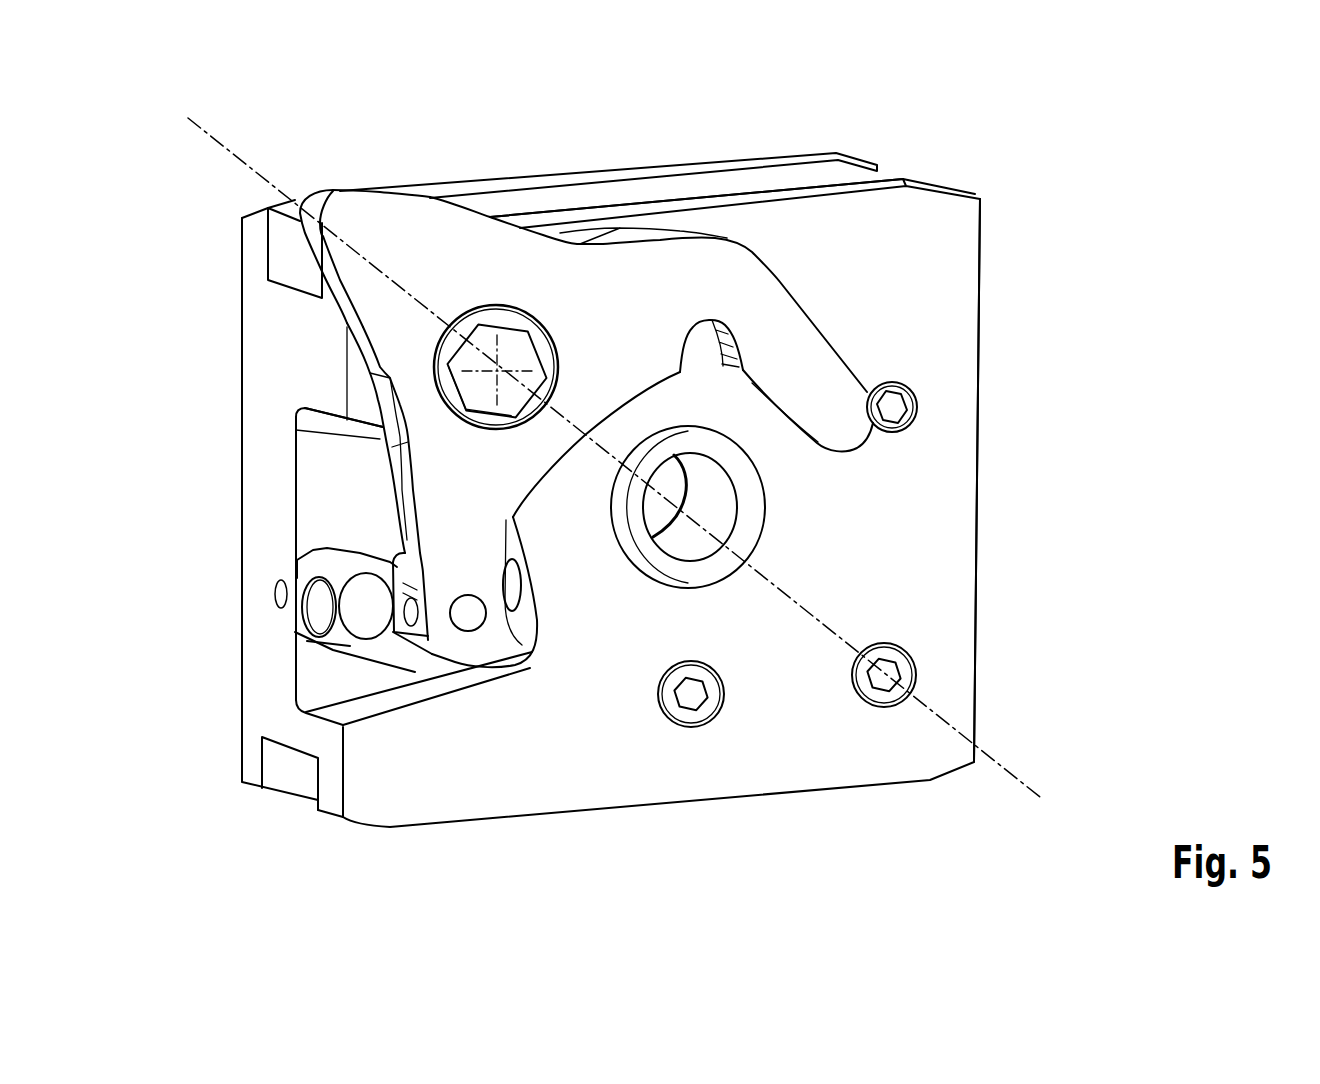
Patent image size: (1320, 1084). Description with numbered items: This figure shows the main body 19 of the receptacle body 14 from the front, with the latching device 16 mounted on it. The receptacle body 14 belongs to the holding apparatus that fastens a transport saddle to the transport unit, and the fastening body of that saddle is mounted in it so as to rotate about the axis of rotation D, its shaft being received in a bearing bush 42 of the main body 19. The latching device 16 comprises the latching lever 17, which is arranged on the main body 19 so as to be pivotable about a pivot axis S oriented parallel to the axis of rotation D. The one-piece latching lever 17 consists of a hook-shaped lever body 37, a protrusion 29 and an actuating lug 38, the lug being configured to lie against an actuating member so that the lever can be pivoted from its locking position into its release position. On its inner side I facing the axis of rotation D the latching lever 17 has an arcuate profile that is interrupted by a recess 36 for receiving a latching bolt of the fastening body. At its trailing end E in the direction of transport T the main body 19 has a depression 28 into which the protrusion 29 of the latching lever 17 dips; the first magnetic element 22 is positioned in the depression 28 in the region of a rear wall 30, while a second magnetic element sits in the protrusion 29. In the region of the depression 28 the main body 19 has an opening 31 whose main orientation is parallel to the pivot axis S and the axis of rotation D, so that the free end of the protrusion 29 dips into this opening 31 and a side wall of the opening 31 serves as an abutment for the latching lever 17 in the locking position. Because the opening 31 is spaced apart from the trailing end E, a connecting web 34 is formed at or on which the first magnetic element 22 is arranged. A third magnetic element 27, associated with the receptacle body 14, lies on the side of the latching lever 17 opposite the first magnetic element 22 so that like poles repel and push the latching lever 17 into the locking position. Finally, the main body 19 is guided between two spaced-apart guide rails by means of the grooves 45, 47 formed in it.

The receptacle body 14 is at (1062, 142).
The latching device 16 is at (950, 276).
The latching lever 17 is at (586, 381).
The main body 19 is at (985, 470).
The first magnetic element 22 is at (317, 613).
The third magnetic element 27 is at (513, 585).
The depression 28 is at (318, 493).
The protrusion 29 is at (397, 558).
The rear wall 30 is at (352, 477).
The opening 31 is at (385, 502).
The connecting web 34 is at (286, 526).
The recess 36 is at (703, 345).
The lever body 37 is at (640, 262).
The actuating lug 38 is at (368, 210).
The bearing bush 42 is at (720, 520).
The groove 45 is at (278, 765).
The groove 47 is at (290, 244).
The axis of rotation D is at (1010, 776).
The pivot axis S is at (557, 423).
The inner side I is at (790, 426).
The trailing end E is at (218, 575).
The direction of transport T is at (692, 875).